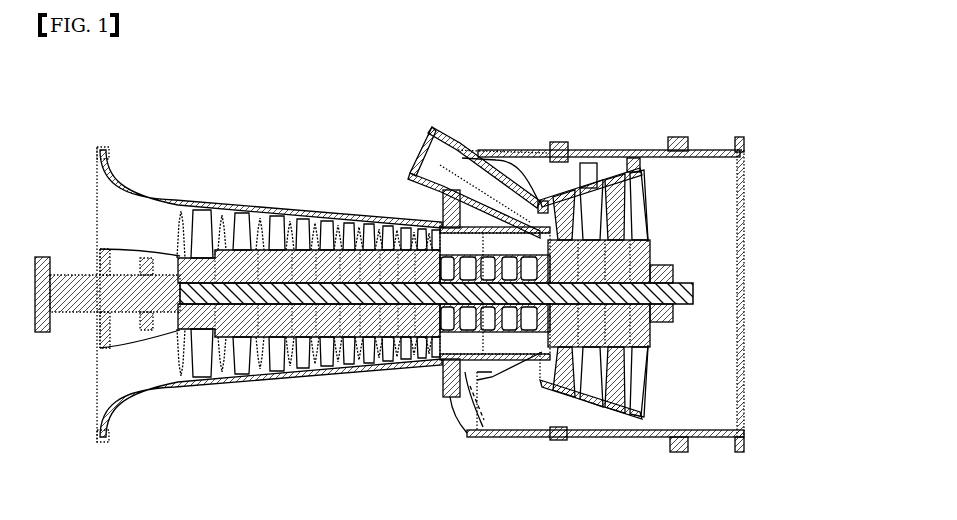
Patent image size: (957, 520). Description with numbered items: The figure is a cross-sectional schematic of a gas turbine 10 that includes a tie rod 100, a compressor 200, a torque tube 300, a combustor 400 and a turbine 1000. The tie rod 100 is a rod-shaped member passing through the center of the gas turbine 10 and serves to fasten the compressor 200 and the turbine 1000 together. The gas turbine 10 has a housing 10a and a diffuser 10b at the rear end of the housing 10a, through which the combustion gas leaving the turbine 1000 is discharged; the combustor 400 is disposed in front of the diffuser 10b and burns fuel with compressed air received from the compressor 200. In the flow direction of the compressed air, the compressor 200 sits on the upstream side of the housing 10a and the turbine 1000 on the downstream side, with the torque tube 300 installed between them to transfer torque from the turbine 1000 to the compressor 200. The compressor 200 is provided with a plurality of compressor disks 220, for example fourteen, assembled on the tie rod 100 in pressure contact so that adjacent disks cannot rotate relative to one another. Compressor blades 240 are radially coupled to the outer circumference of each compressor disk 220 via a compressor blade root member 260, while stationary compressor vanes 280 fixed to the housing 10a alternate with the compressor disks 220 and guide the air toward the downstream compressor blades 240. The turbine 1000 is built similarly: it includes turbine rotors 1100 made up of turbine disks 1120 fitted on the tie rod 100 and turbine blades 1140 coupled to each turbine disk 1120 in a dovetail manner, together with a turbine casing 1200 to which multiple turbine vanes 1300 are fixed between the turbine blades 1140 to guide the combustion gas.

The gas turbine 10 is at (218, 90).
The housing 10a is at (280, 200).
The diffuser 10b is at (707, 140).
The tie rod 100 is at (207, 252).
The compressor 200 is at (227, 387).
The compressor disk 220 is at (350, 217).
The compressor blade 240 is at (306, 214).
The compressor blade root member 260 is at (270, 220).
The compressor vane 280 is at (238, 212).
The torque tube 300 is at (467, 341).
The combustor 400 is at (452, 128).
The turbine 1000 is at (651, 190).
The turbine rotor 1100 is at (826, 213).
The turbine disk 1120 is at (657, 252).
The turbine blade 1140 is at (645, 202).
The turbine casing 1200 is at (618, 153).
The turbine vane 1300 is at (648, 370).